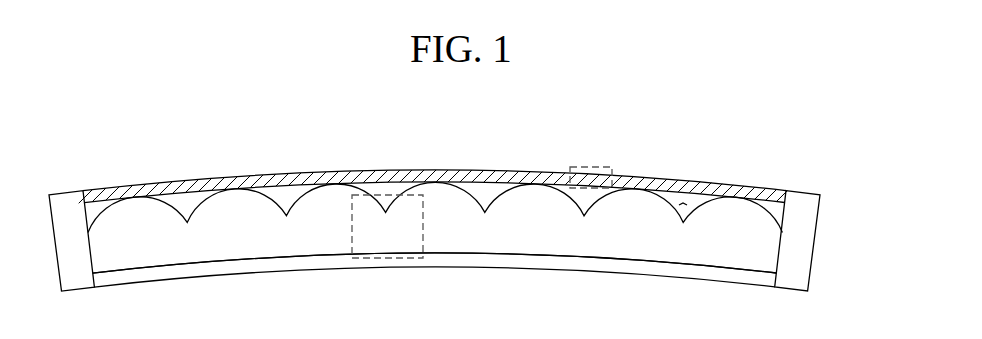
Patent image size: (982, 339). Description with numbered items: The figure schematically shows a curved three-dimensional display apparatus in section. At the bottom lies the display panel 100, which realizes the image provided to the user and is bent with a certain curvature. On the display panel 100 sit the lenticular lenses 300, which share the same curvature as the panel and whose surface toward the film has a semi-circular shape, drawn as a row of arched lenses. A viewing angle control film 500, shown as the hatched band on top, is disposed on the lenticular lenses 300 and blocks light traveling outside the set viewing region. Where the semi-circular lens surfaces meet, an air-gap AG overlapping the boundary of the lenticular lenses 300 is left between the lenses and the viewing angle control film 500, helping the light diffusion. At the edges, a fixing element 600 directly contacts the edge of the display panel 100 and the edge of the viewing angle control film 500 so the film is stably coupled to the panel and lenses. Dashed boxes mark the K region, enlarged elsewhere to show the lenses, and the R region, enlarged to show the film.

The viewing angle control film 500 is at (792, 200).
The lenticular lenses 300 is at (785, 243).
The display panel 100 is at (782, 282).
The fixing element 600 is at (77, 284).
The K region K is at (358, 259).
The R region R is at (591, 164).
The air-gap AG is at (682, 204).